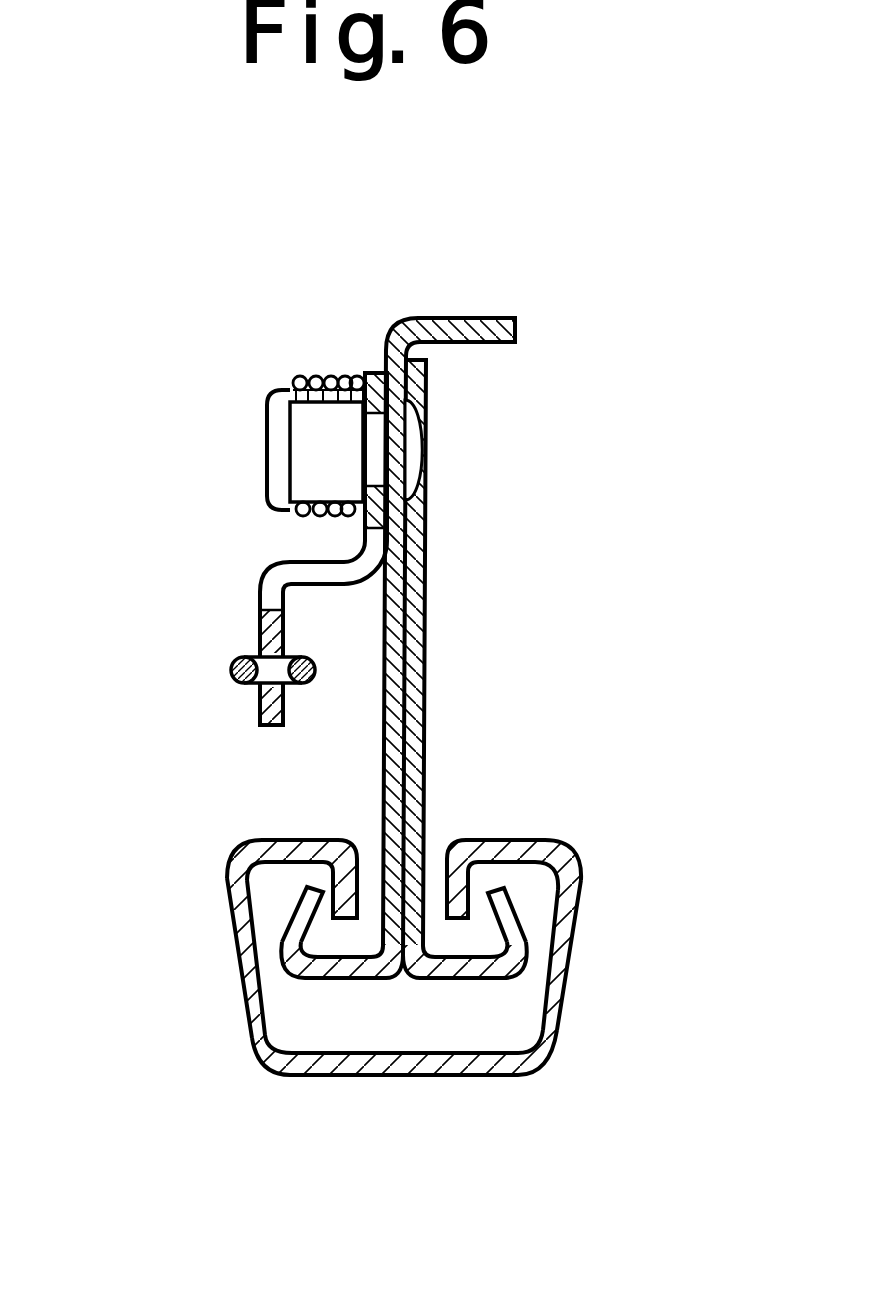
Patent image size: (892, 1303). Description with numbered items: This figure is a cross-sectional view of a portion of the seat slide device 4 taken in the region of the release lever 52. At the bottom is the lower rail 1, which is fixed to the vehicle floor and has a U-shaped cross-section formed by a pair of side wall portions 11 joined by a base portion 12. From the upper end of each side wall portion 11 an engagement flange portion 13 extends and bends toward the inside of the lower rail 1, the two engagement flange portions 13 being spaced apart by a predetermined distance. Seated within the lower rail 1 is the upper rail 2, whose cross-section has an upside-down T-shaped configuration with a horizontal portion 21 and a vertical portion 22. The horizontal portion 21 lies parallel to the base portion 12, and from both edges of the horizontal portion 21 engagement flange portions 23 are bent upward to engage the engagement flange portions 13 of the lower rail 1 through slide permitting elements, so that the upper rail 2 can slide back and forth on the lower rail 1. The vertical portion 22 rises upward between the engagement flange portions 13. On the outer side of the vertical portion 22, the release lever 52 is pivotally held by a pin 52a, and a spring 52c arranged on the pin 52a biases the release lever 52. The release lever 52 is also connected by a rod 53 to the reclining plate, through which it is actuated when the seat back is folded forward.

The lower rail 1 is at (263, 1069).
The side wall portion 11 is at (247, 982).
The base portion 12 is at (465, 1067).
The engagement flange portion 13 is at (283, 841).
The upper rail 2 is at (460, 308).
The horizontal portion 21 is at (383, 965).
The vertical portion 22 is at (397, 633).
The engagement flange portion 23 is at (312, 897).
The seat slide device 4 is at (527, 766).
The release lever 52 is at (371, 368).
The pin 52a is at (310, 437).
The spring 52c is at (318, 380).
The rod 53 is at (231, 670).